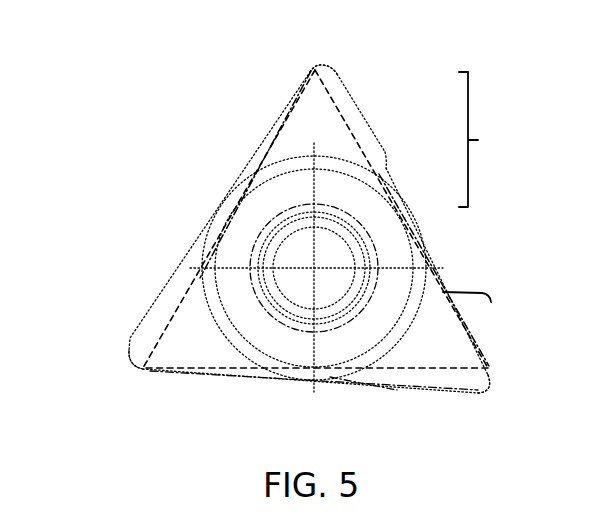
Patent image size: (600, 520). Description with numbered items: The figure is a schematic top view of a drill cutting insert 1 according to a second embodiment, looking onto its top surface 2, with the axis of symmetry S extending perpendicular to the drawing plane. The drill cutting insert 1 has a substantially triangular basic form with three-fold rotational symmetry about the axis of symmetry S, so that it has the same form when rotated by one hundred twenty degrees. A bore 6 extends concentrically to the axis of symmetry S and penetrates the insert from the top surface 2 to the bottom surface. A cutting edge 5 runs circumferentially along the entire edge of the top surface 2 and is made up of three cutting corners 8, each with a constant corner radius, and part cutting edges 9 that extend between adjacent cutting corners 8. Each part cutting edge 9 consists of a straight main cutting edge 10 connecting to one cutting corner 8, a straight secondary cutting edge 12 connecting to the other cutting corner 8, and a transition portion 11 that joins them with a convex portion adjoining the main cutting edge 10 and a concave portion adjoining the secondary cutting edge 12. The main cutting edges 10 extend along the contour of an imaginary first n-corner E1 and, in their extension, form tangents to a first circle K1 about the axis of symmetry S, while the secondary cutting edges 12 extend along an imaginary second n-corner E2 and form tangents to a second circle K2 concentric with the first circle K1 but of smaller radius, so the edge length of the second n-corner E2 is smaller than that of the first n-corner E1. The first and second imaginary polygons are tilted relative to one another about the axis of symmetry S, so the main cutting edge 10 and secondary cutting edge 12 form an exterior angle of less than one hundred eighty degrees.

The drill cutting insert 1 is at (57, 103).
The top surface 2 is at (153, 303).
The cutting edge 5 is at (397, 390).
The bore 6 is at (287, 261).
The cutting corner 8 is at (333, 67).
The part cutting edge 9 is at (478, 139).
The main cutting edge 10 is at (358, 92).
The transition portion 11 is at (384, 172).
The secondary cutting edge 12 is at (423, 252).
The first circle K1 is at (407, 337).
The second circle K2 is at (288, 173).
The first n-corner E1 is at (437, 260).
The second n-corner E2 is at (428, 370).
The axis of symmetry S is at (313, 270).